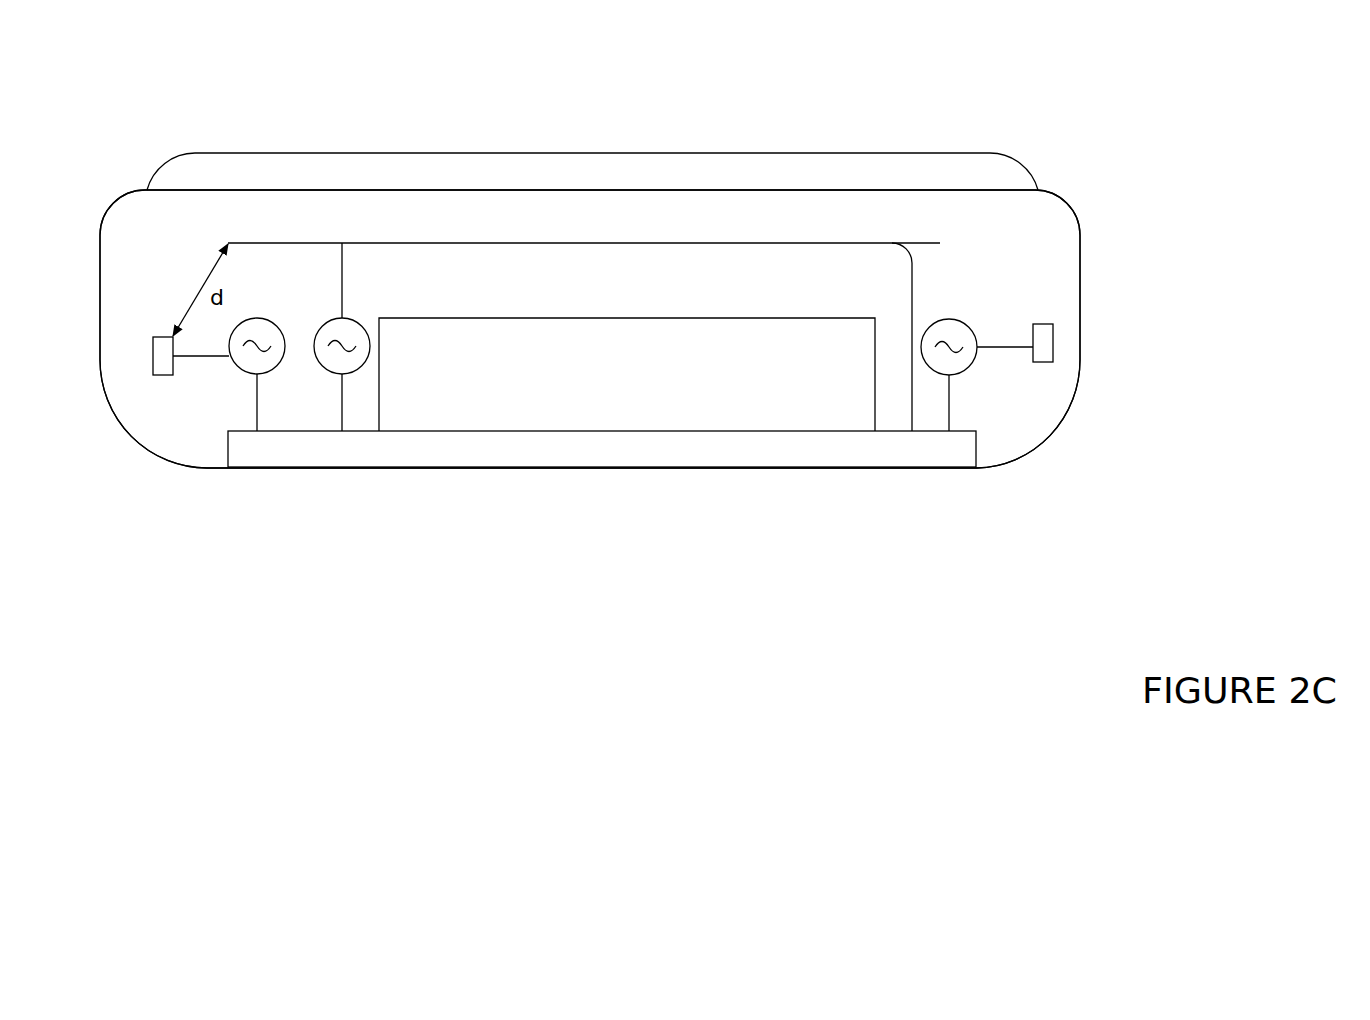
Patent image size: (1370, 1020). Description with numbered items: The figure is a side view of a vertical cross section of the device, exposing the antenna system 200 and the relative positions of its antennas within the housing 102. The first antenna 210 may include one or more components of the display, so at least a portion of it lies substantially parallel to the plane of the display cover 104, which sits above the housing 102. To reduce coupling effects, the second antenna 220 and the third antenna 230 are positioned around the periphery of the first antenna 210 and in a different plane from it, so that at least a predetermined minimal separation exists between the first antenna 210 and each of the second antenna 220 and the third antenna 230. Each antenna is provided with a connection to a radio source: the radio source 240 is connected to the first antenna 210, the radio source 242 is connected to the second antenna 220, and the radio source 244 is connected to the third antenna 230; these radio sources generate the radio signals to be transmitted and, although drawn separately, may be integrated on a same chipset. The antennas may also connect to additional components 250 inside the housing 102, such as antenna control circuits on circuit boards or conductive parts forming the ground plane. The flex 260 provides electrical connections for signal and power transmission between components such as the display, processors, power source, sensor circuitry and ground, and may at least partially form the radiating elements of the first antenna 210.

The antenna system 200 is at (577, 88).
The housing 102 is at (1070, 300).
The display cover 104 is at (993, 170).
The first antenna 210 is at (887, 233).
The second antenna 220 is at (170, 327).
The third antenna 230 is at (1053, 360).
The radio source 240 is at (370, 350).
The radio source 242 is at (247, 378).
The radio source 244 is at (970, 370).
The additional components 250 is at (743, 338).
The flex 260 is at (915, 293).